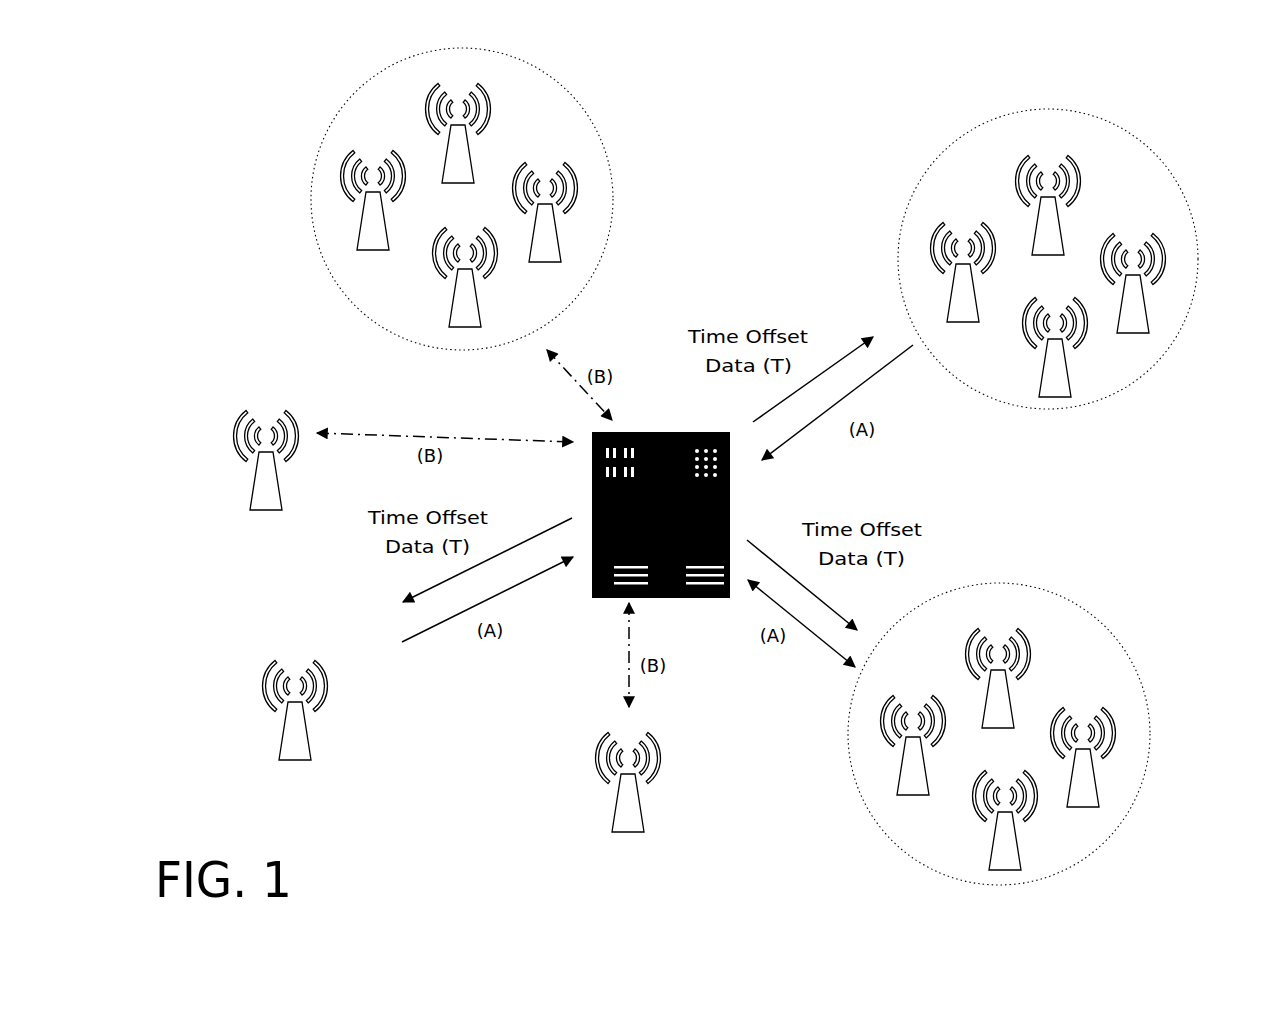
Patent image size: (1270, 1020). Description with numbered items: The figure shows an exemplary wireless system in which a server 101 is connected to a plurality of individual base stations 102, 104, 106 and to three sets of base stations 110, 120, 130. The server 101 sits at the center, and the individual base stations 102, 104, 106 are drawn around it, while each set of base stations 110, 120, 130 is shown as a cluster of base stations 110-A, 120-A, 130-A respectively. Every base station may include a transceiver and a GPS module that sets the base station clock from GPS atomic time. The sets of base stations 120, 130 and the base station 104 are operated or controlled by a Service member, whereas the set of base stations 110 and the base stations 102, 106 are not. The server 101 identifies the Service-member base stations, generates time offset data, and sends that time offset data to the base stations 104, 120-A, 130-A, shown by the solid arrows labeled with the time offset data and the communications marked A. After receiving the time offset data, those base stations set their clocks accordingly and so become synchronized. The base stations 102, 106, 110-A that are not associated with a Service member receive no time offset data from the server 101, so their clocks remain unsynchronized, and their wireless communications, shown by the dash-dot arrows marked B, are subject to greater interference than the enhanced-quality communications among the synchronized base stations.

The server 101 is at (648, 432).
The base station 102 is at (290, 427).
The base station 104 is at (318, 665).
The base station 106 is at (657, 745).
The set of base stations 110 is at (612, 203).
The base station 110-A is at (444, 95).
The set of base stations 120 is at (1198, 242).
The base station 120-A is at (1034, 167).
The set of base stations 130 is at (1134, 660).
The base station 130-A is at (984, 642).